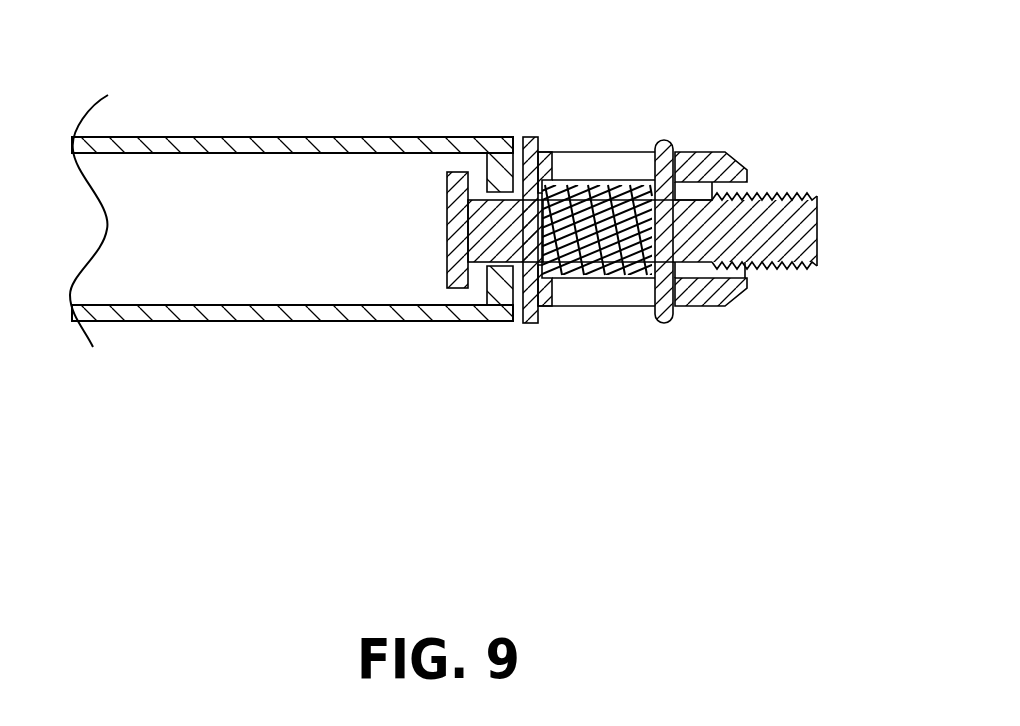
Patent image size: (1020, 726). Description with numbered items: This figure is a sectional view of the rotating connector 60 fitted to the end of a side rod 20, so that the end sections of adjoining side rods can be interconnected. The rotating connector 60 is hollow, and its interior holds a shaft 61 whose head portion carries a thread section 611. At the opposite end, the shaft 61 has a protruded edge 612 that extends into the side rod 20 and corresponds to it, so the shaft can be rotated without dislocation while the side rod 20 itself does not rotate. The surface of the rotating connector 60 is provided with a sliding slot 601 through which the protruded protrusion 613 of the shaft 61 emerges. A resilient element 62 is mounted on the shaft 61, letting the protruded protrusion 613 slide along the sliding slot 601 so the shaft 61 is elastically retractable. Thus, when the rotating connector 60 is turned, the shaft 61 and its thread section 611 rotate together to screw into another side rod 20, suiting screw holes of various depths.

The side rod 20 is at (300, 314).
The rotating connector 60 is at (720, 152).
The sliding slot 601 is at (598, 152).
The shaft 61 is at (712, 243).
The thread section 611 is at (818, 203).
The protruded edge 612 is at (455, 290).
The protruded protrusion 613 is at (667, 140).
The resilient element 62 is at (599, 276).